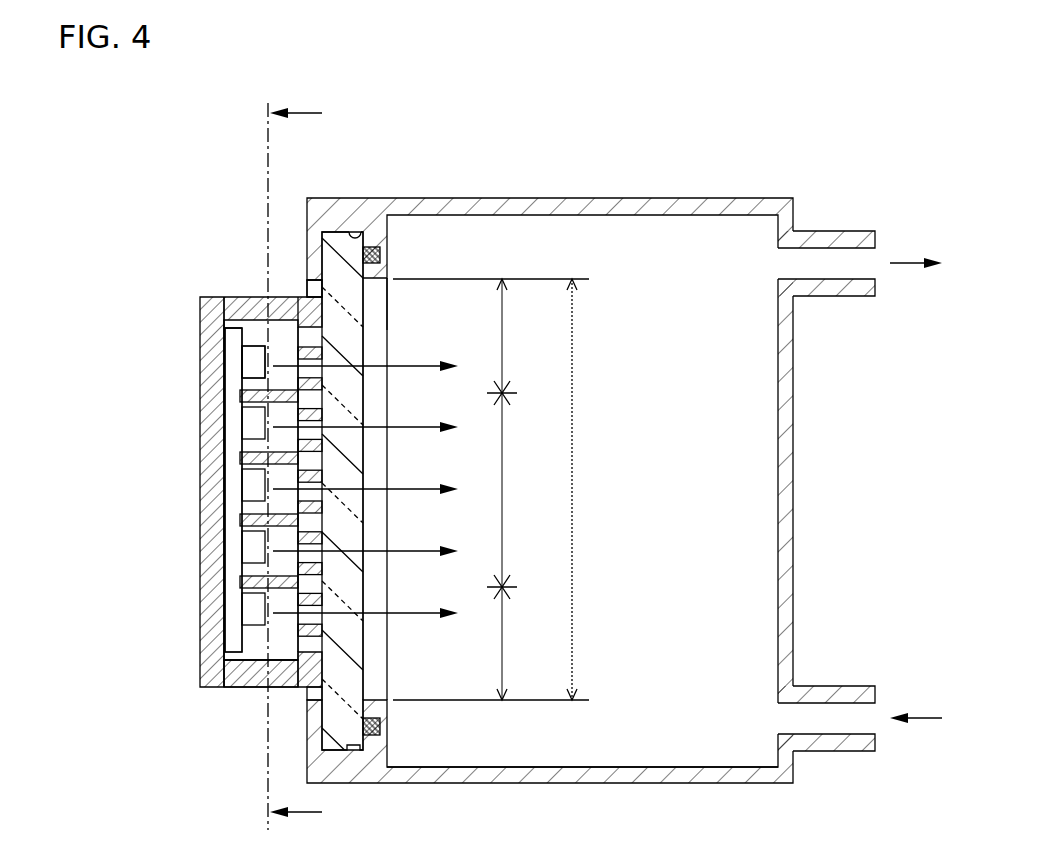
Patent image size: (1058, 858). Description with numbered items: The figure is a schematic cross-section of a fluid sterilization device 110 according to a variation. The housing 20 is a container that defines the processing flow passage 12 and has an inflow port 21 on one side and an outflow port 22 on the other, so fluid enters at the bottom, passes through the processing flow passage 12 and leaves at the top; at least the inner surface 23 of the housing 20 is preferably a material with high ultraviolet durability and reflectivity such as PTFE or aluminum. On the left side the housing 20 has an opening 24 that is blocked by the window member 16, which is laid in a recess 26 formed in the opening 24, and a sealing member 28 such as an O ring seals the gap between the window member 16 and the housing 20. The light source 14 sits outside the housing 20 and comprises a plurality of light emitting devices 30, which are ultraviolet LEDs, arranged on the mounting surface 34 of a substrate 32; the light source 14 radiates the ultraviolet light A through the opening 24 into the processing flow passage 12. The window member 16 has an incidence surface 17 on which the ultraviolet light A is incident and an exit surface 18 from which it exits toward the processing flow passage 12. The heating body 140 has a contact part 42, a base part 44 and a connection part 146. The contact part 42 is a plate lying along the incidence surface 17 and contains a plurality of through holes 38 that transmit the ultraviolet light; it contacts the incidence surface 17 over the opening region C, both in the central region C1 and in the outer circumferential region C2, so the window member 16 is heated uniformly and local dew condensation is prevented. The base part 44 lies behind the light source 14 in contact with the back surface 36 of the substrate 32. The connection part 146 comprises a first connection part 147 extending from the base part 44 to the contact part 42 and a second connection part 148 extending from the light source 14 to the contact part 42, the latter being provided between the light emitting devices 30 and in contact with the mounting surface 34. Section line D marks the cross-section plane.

The fluid sterilization device 110 is at (803, 143).
The housing 20 is at (625, 207).
The processing flow passage 12 is at (691, 551).
The outflow port 22 is at (833, 285).
The inflow port 21 is at (828, 693).
The inner surface 23 is at (643, 767).
The window member 16 is at (335, 233).
The recess 26 is at (358, 233).
The incidence surface 17 is at (323, 284).
The sealing member 28 is at (382, 256).
The contact part 42 is at (365, 690).
The opening 24 is at (387, 298).
The exit surface 18 is at (378, 338).
The heating body 140 is at (195, 527).
The base part 44 is at (210, 580).
The mounting surface 34 is at (249, 337).
The back surface 36 is at (225, 337).
The substrate 32 is at (228, 348).
The light emitting devices 30 is at (247, 609).
The light source 14 is at (142, 355).
The second connection part 148 is at (242, 588).
The first connection part 147 is at (225, 673).
The connection part 146 is at (132, 613).
The through holes 38 is at (313, 369).
The ultraviolet light A is at (410, 616).
The section line D is at (307, 465).
The opening region C is at (573, 483).
The central region C1 is at (503, 483).
The outer circumferential region C2 is at (503, 340).